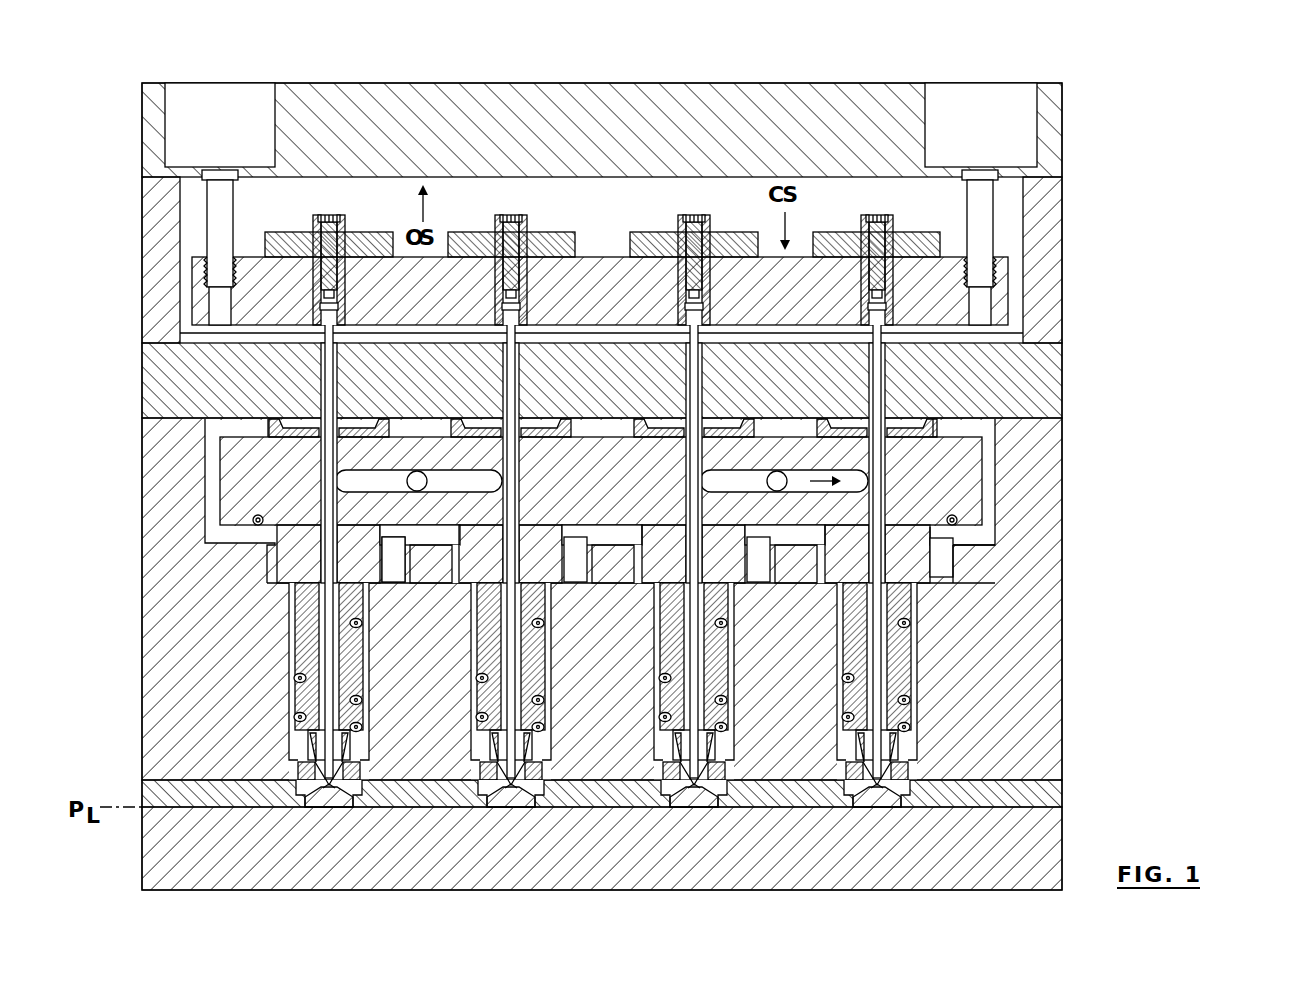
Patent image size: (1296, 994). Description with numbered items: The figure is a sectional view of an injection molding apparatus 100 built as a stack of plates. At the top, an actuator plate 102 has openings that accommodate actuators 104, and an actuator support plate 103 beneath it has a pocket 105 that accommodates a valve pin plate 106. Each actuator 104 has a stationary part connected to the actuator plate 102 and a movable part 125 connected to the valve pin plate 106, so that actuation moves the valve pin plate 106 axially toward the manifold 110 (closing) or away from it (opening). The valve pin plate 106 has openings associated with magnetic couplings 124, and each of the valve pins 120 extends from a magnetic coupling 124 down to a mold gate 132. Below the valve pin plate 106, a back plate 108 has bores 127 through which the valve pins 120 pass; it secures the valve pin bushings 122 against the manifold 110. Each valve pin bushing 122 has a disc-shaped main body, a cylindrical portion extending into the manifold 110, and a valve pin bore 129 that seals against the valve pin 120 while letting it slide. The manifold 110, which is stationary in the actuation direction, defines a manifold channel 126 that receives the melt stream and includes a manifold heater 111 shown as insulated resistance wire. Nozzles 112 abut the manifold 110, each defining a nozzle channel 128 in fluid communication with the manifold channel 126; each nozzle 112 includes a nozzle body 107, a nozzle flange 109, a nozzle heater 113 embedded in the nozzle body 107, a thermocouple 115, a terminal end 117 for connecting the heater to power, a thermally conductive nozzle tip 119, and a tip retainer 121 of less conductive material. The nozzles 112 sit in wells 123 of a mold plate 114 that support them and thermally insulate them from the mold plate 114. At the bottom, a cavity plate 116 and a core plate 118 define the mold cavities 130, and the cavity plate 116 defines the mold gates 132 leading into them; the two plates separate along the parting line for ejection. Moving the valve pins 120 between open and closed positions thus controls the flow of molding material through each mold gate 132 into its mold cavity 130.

The injection molding apparatus 100 is at (1199, 148).
The actuator plate 102 is at (1062, 140).
The actuator support plate 103 is at (1062, 246).
The actuators 104 is at (985, 85).
The pocket 105 is at (622, 218).
The valve pin plate 106 is at (1008, 300).
The nozzle body 107 is at (903, 688).
The back plate 108 is at (1062, 397).
The nozzle flange 109 is at (920, 537).
The manifold 110 is at (885, 470).
The manifold heater 111 is at (255, 518).
The nozzles 112 is at (902, 663).
The nozzle heater 113 is at (298, 718).
The mold plate 114 is at (1050, 698).
The thermocouple 115 is at (350, 755).
The cavity plate 116 is at (1050, 790).
The terminal end 117 is at (396, 566).
The core plate 118 is at (1040, 838).
The nozzle tip 119 is at (522, 792).
The valve pins 120 is at (883, 630).
The tip retainer 121 is at (510, 788).
The valve pin bushings 122 is at (942, 428).
The wells 123 is at (838, 648).
The magnetic couplings 124 is at (926, 228).
The movable part 125 is at (990, 192).
The manifold channel 126 is at (957, 518).
The bores 127 is at (885, 372).
The nozzle channels 128 is at (905, 585).
The valve pin bore 129 is at (877, 432).
The mold cavities 130 is at (848, 808).
The mold gates 132 is at (880, 790).